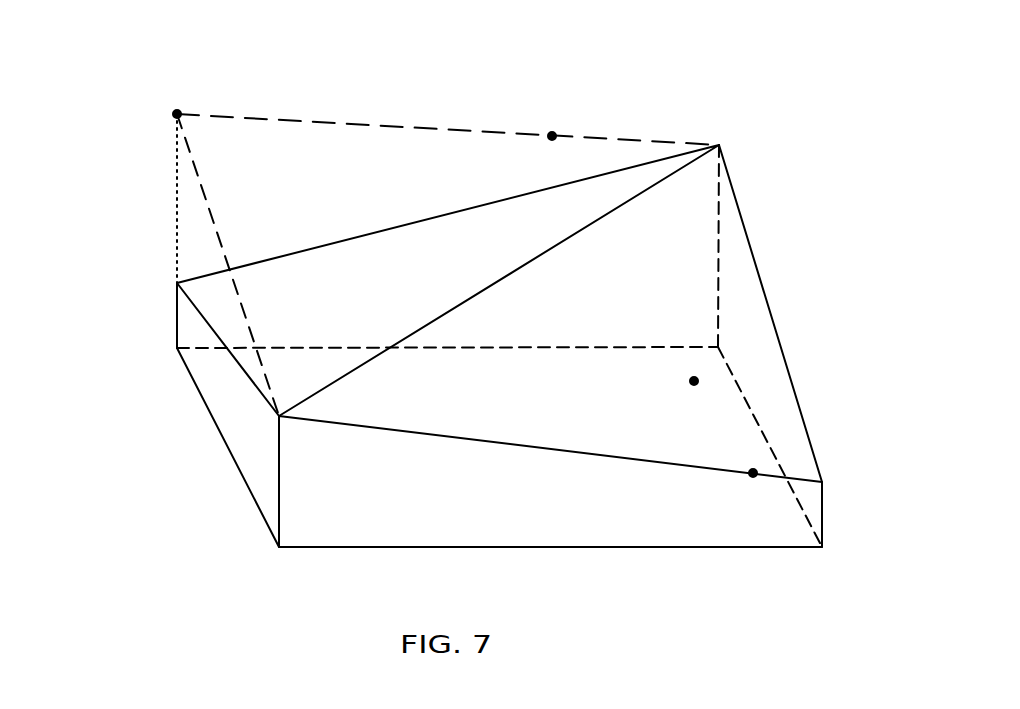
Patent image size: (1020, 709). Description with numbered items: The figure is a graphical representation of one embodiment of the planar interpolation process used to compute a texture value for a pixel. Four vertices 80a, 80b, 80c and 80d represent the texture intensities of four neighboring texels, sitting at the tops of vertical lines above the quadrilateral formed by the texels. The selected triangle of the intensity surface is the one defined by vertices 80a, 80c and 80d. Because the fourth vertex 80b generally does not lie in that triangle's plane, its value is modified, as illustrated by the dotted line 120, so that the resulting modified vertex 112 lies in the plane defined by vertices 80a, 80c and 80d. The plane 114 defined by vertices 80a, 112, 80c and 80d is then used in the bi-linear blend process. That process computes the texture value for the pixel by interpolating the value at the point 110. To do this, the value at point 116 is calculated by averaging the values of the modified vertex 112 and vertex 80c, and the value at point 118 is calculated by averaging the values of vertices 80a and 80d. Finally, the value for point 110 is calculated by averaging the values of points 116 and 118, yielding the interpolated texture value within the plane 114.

The vertex 80a is at (279, 416).
The vertex 80b is at (177, 283).
The vertex 80c is at (719, 145).
The vertex 80d is at (822, 482).
The point 110 is at (694, 381).
The modified vertex 112 is at (177, 114).
The plane 114 is at (313, 180).
The point 116 is at (552, 136).
The point 118 is at (753, 473).
The dotted line 120 is at (177, 197).